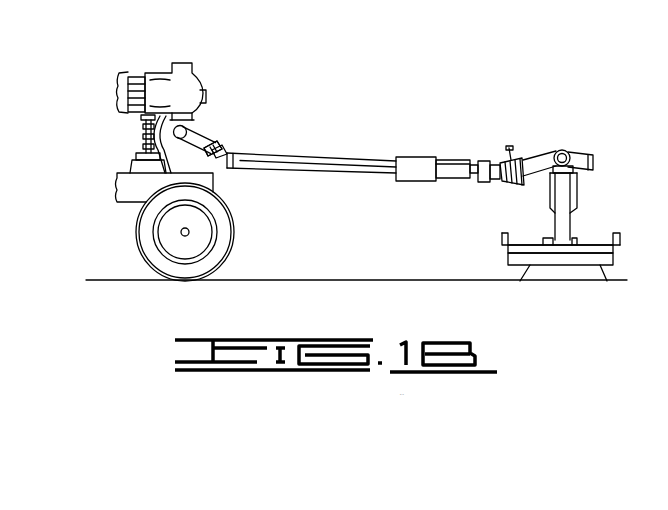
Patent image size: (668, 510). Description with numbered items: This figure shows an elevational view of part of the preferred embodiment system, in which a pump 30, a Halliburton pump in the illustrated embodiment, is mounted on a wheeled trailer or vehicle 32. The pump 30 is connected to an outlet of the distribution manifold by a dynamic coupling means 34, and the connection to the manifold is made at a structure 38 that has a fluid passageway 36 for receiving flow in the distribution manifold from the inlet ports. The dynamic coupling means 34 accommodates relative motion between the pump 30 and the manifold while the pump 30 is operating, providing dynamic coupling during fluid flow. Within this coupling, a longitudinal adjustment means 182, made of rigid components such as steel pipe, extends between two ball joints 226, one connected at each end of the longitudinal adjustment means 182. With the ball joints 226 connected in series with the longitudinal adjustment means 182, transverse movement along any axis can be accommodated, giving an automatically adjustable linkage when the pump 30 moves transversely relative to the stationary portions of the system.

The pump 30 is at (203, 70).
The wheeled trailer or vehicle 32 is at (133, 188).
The dynamic coupling means 34 is at (329, 133).
The fluid passageway 36 is at (570, 151).
The structure 38 is at (554, 138).
The longitudinal adjustment means 182 is at (341, 184).
The ball joints 226 is at (228, 134).